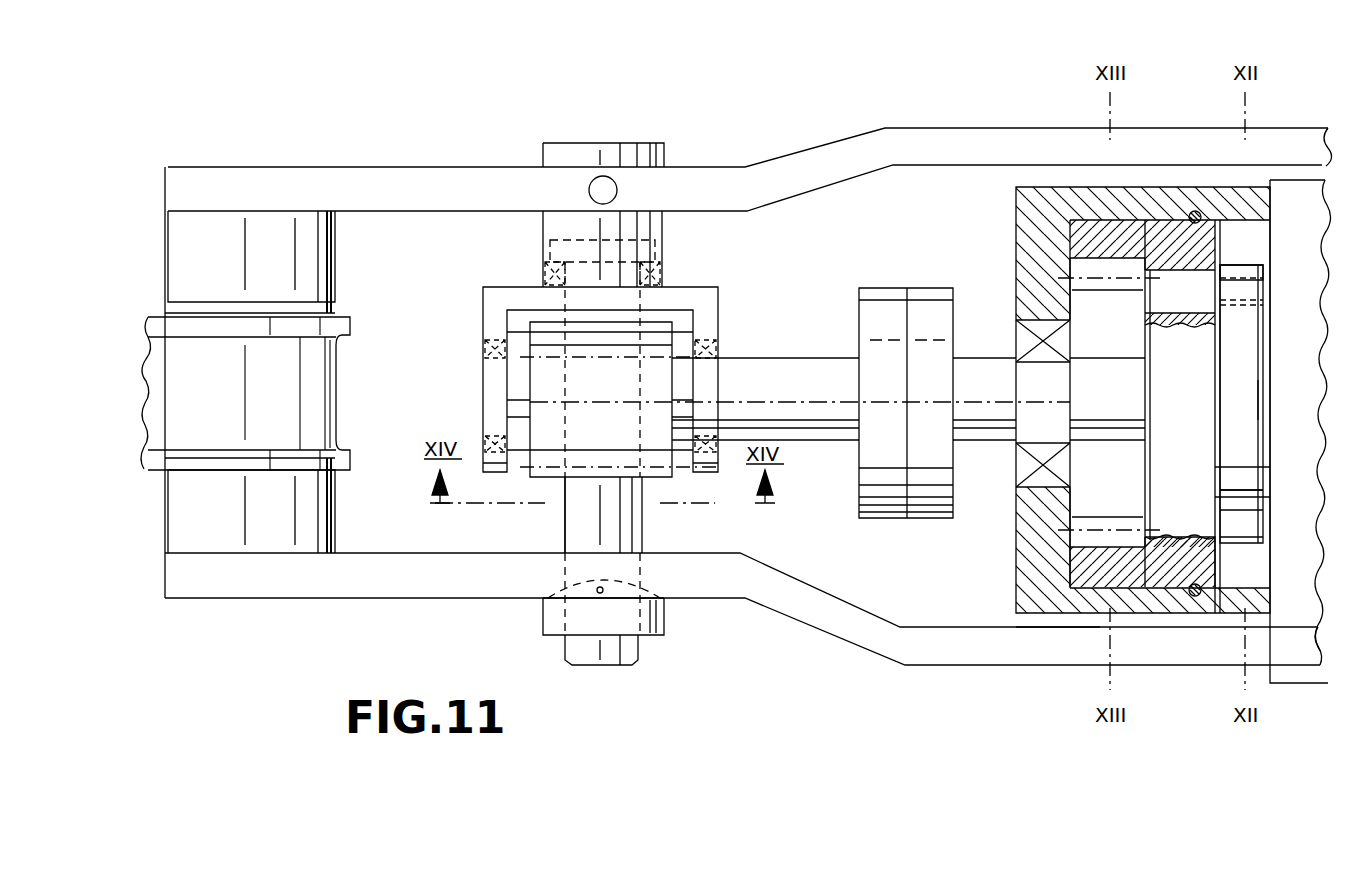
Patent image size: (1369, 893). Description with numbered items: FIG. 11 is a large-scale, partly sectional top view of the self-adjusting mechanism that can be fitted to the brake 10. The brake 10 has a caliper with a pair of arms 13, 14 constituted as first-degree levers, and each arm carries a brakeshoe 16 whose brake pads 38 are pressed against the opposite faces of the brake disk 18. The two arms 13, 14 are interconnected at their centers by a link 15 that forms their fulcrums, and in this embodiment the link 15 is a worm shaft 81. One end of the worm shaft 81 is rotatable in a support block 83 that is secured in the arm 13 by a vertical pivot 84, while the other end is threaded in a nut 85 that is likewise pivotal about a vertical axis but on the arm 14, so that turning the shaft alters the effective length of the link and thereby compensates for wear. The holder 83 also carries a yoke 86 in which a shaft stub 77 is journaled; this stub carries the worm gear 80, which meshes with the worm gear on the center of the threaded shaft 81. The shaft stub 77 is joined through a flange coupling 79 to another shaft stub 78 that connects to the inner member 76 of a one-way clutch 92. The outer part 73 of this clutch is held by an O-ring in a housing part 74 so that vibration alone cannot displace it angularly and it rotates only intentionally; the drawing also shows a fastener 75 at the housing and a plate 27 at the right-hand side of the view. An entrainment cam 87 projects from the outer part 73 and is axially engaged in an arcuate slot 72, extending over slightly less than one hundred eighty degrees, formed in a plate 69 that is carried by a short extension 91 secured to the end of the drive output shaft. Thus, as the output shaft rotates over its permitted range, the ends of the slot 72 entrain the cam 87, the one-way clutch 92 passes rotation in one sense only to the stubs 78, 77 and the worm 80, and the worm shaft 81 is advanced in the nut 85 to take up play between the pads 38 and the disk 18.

The brake 10 is at (640, 708).
The arm 13 is at (390, 179).
The arm 14 is at (380, 580).
The link 15 is at (563, 510).
The brakeshoe 16 is at (323, 250).
The brake disk 18 is at (268, 402).
The plate 27 is at (1300, 203).
The brake pad 38 is at (333, 310).
The plate 69 is at (1256, 490).
The arcuate slot 72 is at (1264, 307).
The outer part of one-way clutch 73 is at (1172, 224).
The housing part 74 is at (1081, 206).
The screw 75 is at (1193, 596).
The inner member of one-way clutch 76 is at (1097, 532).
The shaft stub 77 is at (808, 373).
The shaft stub 78 is at (983, 375).
The flange coupling 79 is at (908, 302).
The worm gear 80 is at (655, 372).
The worm shaft 81 is at (612, 536).
The support block 83 is at (572, 158).
The vertical pivot 84 is at (606, 188).
The nut 85 is at (660, 628).
The yoke 86 is at (511, 294).
The entrainment cam 87 is at (1268, 292).
The extension 91 is at (1268, 402).
The one-way clutch 92 is at (1082, 628).